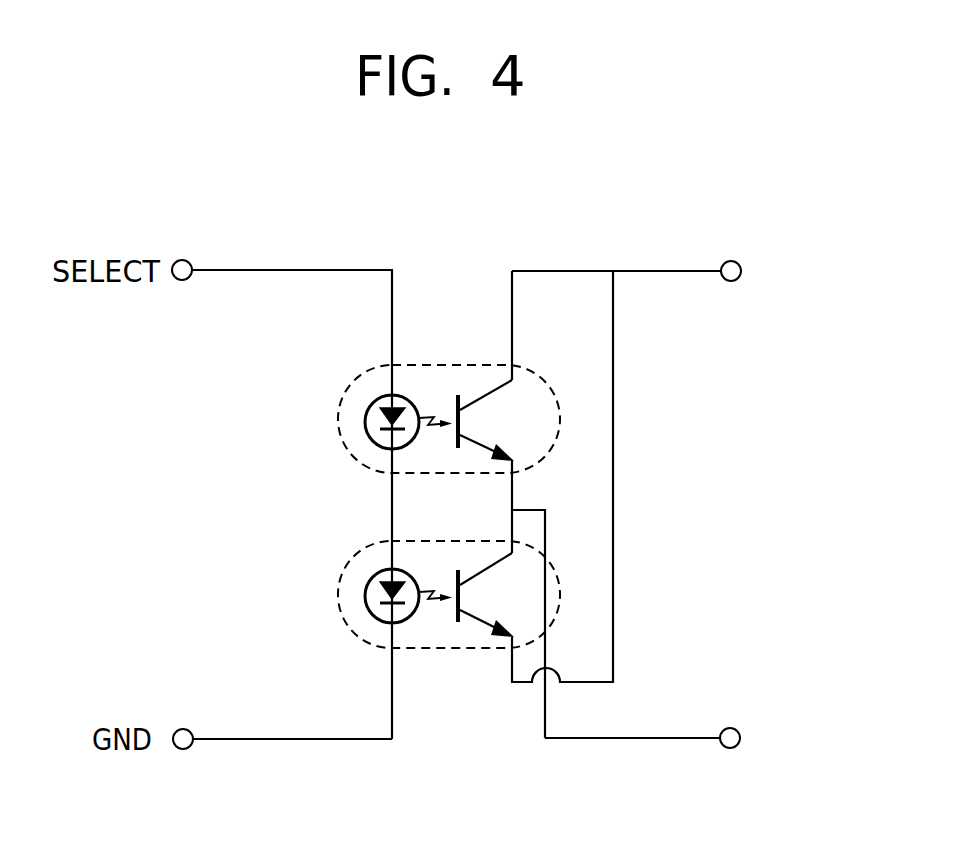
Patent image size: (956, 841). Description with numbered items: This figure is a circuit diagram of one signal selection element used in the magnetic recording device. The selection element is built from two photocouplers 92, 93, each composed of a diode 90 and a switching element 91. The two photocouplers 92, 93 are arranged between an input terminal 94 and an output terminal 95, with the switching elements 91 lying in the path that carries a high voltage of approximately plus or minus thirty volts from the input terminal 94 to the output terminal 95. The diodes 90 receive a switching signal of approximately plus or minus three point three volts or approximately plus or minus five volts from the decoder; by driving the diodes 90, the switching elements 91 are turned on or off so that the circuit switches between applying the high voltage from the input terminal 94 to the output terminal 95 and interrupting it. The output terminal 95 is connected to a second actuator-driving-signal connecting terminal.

The diode 90 is at (372, 431).
The switching element 91 is at (514, 421).
The photocoupler 92 is at (450, 352).
The photocoupler 93 is at (463, 650).
The input terminal 94 is at (731, 281).
The output terminal 95 is at (738, 728).